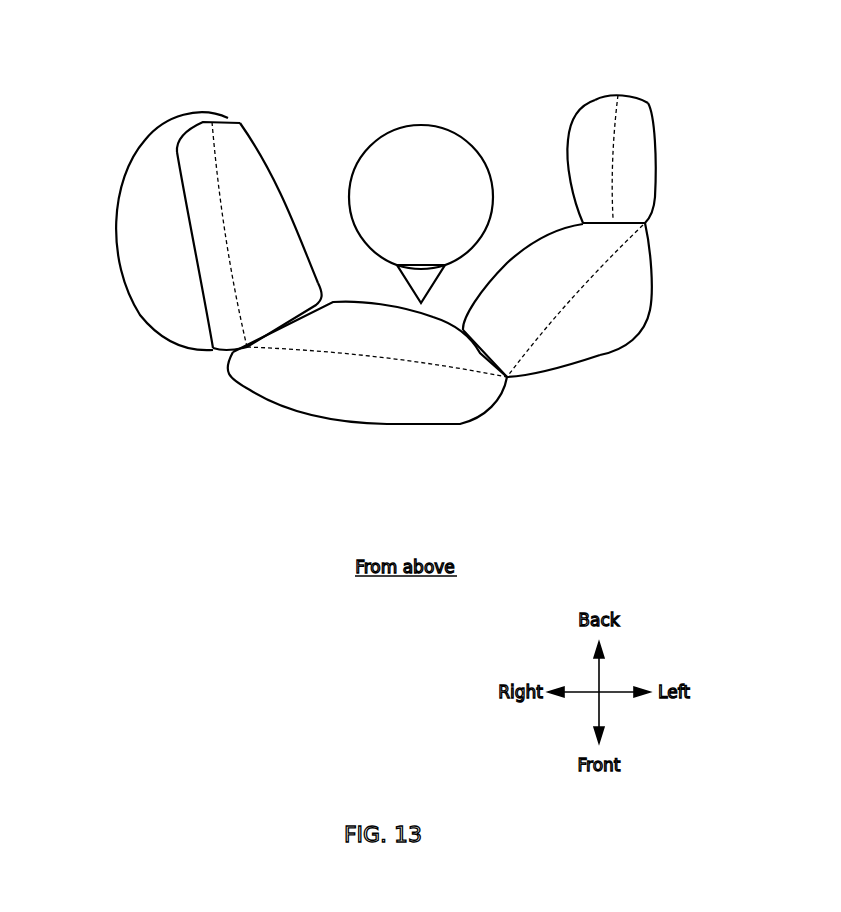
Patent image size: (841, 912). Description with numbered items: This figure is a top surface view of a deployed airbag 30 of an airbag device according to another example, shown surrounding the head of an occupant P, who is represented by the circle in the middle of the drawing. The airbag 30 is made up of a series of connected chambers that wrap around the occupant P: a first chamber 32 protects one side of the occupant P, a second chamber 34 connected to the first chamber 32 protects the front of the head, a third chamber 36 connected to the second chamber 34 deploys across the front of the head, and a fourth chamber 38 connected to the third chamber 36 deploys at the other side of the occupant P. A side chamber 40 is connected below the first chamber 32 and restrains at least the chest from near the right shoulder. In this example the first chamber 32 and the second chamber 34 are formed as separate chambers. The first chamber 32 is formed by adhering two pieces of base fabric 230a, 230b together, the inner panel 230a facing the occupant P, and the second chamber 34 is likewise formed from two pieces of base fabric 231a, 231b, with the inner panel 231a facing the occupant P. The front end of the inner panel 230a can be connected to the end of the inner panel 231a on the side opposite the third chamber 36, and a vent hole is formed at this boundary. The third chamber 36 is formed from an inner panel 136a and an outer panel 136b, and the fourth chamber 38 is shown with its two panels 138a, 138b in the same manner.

The airbag 30 is at (509, 441).
The first chamber 32 is at (208, 253).
The second chamber 34 is at (378, 408).
The third chamber 36 is at (593, 340).
The fourth chamber 38 is at (597, 110).
The side chamber 40 is at (128, 180).
The inner panel 230a is at (265, 153).
The base fabric 230b is at (182, 205).
The inner panel 231a is at (347, 300).
The base fabric 231b is at (290, 413).
The inner panel 136a is at (536, 258).
The outer panel 136b is at (653, 292).
The inner surface of left rear portion 138a is at (565, 135).
The outer surface of left rear portion 138b is at (657, 163).
The occupant P is at (422, 128).